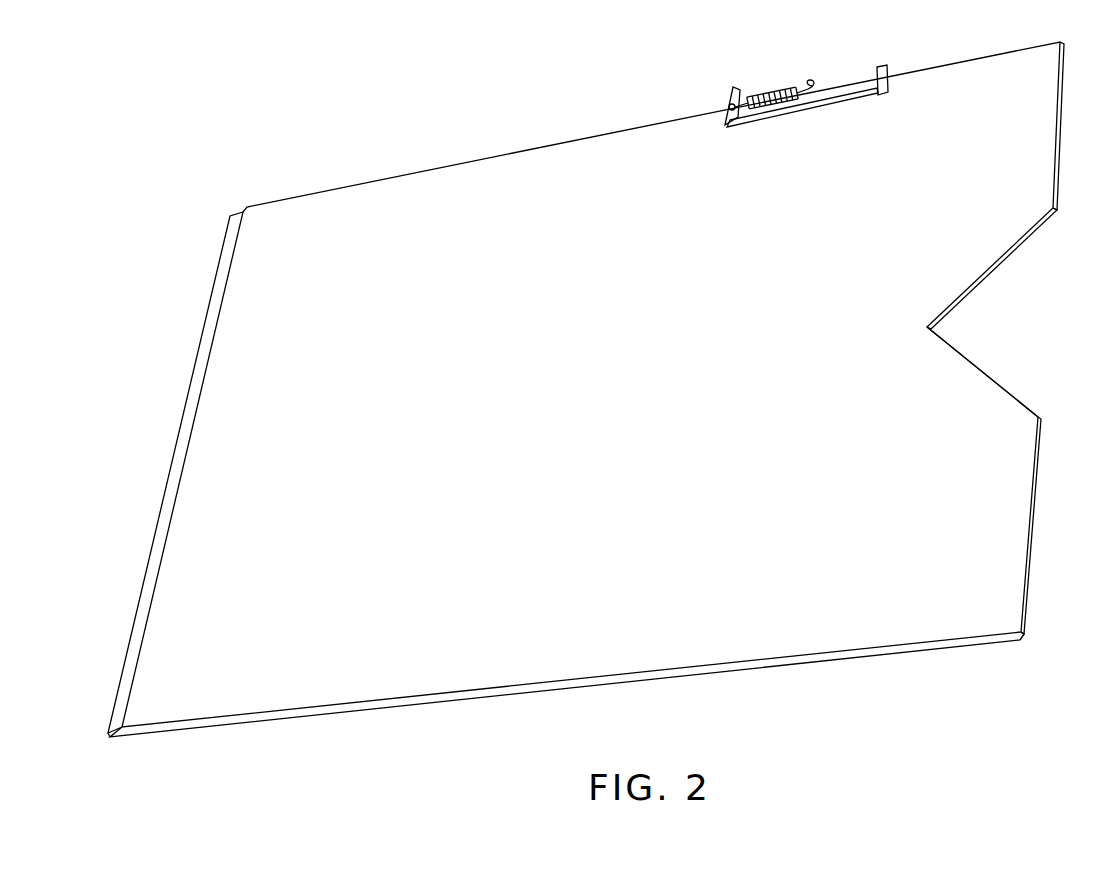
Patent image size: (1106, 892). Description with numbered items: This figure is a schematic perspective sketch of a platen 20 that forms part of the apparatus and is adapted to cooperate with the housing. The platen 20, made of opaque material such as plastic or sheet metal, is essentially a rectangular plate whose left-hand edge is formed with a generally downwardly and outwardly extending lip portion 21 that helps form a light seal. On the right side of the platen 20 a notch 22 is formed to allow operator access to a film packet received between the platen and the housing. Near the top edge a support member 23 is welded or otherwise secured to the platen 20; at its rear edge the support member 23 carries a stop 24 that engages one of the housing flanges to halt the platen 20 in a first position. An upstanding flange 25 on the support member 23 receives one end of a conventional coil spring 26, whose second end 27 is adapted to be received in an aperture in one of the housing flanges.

The platen 20 is at (1008, 496).
The lip portion 21 is at (167, 507).
The notch 22 is at (998, 268).
The support member 23 is at (845, 95).
The stop 24 is at (878, 66).
The upstanding flange 25 is at (737, 88).
The coil spring 26 is at (765, 92).
The second end 27 is at (815, 85).